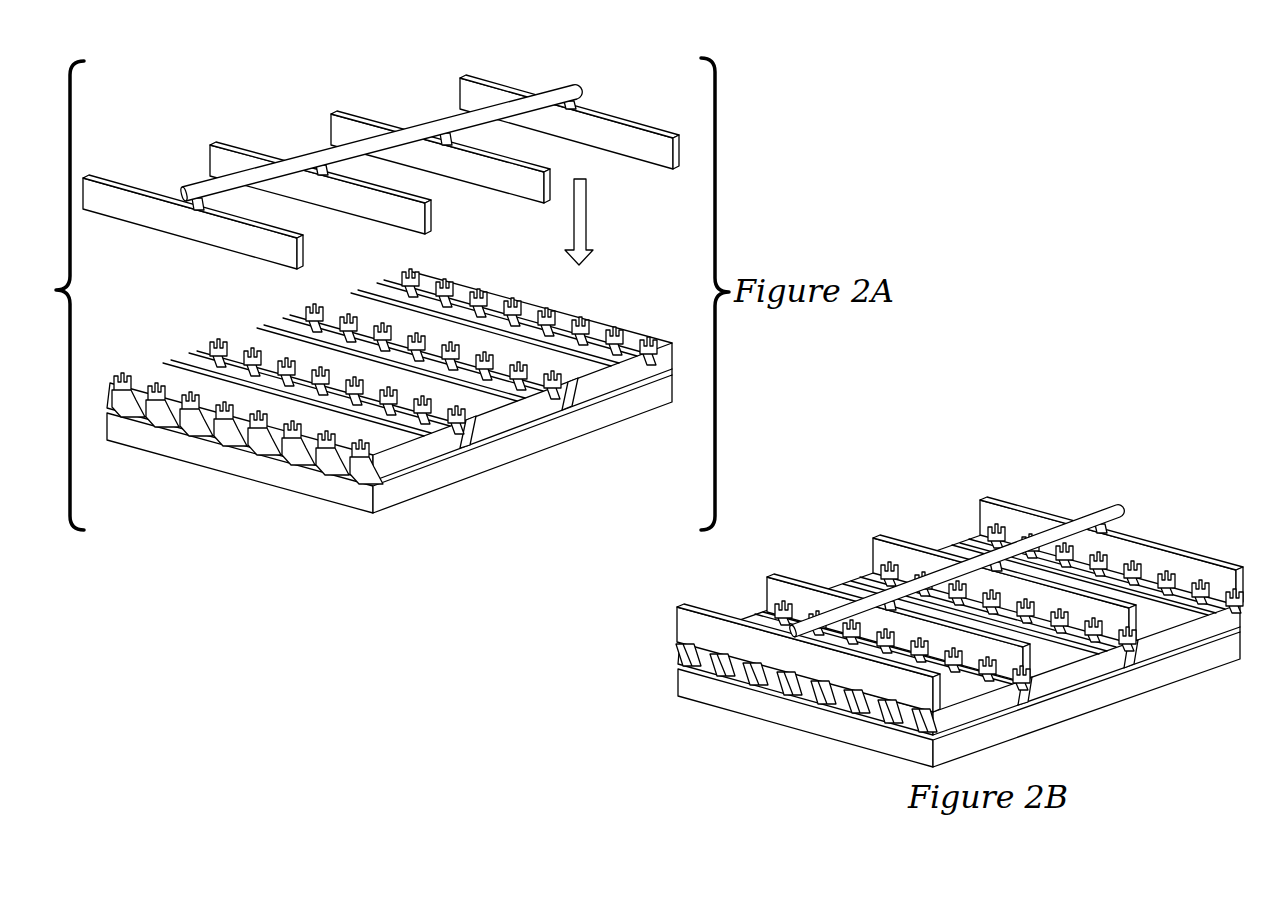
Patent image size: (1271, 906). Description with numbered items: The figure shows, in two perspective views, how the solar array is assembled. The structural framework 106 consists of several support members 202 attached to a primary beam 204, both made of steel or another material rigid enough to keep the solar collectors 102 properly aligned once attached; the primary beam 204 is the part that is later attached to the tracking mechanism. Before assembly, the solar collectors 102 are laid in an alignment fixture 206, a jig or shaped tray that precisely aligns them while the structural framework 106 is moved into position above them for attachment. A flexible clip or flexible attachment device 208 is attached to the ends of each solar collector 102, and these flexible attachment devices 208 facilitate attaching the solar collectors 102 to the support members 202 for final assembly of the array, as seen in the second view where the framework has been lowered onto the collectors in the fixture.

In FIG. 2A, the solar collector 102 is at (398, 450).
In FIG. 2A, the structural framework 106 is at (381, 167).
In FIG. 2A, the support member 202 is at (468, 97).
In FIG. 2B, the support member 202 is at (975, 511).
In FIG. 2A, the primary beam 204 is at (485, 111).
In FIG. 2A, the alignment fixture 206 is at (412, 488).
In FIG. 2A, the flexible attachment device 208 is at (306, 469).
In FIG. 2B, the flexible attachment device 208 is at (887, 571).